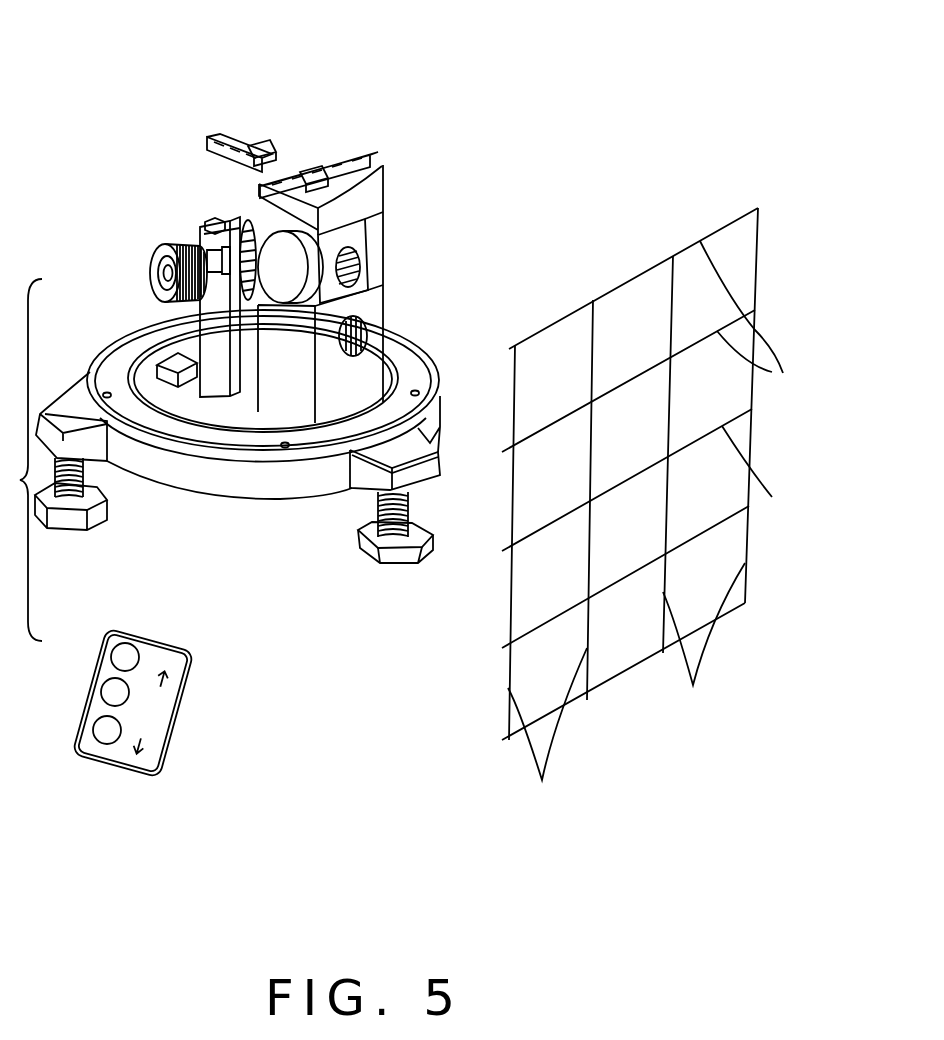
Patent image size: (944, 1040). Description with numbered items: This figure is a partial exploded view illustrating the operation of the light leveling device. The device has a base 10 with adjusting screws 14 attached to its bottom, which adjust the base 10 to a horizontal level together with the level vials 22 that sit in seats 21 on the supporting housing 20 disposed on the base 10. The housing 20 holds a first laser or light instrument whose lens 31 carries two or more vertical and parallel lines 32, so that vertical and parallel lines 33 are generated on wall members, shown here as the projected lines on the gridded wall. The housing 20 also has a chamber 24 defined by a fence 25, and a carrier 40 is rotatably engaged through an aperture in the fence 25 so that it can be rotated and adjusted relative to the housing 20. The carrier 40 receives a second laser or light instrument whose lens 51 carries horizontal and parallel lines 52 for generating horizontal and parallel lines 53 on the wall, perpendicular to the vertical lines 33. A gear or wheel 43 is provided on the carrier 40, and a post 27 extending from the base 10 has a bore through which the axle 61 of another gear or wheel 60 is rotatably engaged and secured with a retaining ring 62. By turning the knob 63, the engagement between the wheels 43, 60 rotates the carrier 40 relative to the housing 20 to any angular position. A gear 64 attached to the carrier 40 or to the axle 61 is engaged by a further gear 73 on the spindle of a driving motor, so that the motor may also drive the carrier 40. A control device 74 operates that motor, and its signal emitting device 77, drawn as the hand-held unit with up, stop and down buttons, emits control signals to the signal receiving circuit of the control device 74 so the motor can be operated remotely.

The base 10 is at (222, 487).
The adjusting screws 14 is at (70, 507).
The supporting housing 20 is at (330, 410).
The seats 21 is at (268, 165).
The level vials 22 is at (243, 143).
The chamber 24 is at (302, 313).
The fence 25 is at (375, 223).
The post 27 is at (220, 393).
The lens 31 is at (363, 317).
The vertical and parallel lines 32 is at (366, 334).
The vertical and parallel lines 33 is at (626, 689).
The carrier 40 is at (378, 190).
The wheel 43 is at (287, 284).
The lens 51 is at (360, 252).
The horizontal and parallel lines 52 is at (360, 266).
The horizontal and parallel lines 53 is at (647, 474).
The wheel 60 is at (250, 222).
The axle 61 is at (200, 253).
The retaining ring 62 is at (215, 226).
The gear 64 is at (210, 250).
The knob 63 is at (150, 275).
The gear 73 is at (250, 284).
The control device 74 is at (165, 372).
The signal emitting device 77 is at (145, 765).